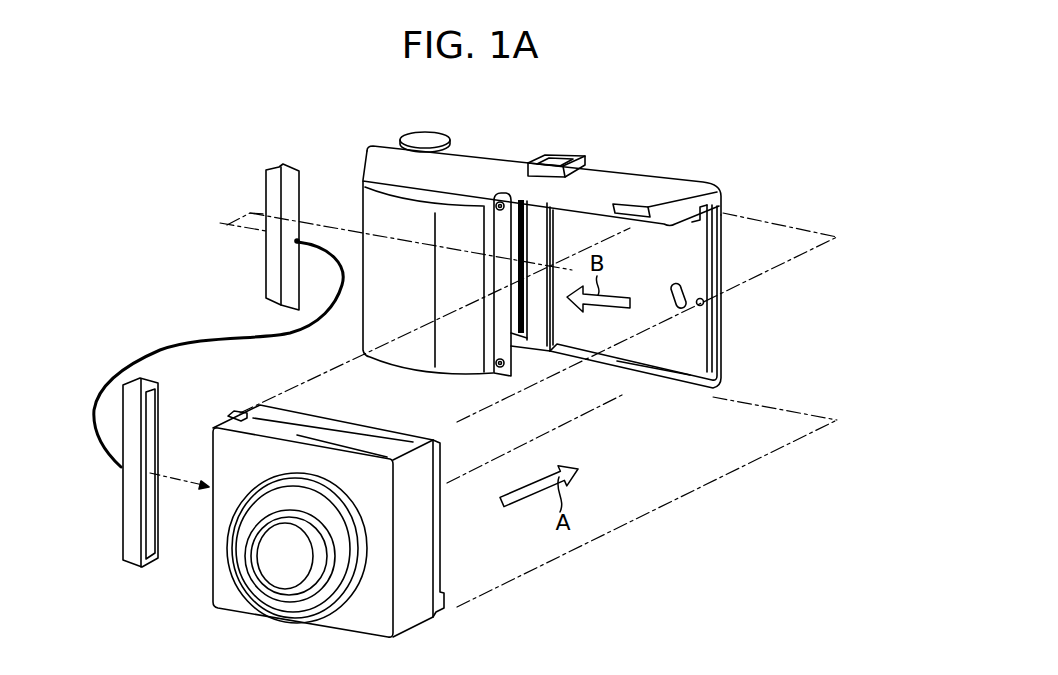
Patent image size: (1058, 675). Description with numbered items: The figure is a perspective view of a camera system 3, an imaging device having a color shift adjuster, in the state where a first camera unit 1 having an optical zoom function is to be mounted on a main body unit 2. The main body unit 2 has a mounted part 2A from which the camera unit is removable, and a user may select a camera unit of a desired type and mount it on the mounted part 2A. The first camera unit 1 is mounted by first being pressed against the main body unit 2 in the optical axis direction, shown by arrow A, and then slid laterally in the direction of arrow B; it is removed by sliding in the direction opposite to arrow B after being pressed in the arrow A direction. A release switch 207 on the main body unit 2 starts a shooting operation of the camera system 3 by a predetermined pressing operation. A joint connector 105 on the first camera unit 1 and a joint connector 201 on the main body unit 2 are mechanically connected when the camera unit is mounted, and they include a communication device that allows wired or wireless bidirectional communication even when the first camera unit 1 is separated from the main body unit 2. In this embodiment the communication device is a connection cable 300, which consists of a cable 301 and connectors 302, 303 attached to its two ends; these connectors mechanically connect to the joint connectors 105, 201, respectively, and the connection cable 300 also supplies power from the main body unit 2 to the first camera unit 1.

The first camera unit 1 is at (222, 428).
The main body unit 2 is at (517, 148).
The mounted part 2A is at (630, 253).
The camera system 3 is at (707, 168).
The joint connector 105 is at (235, 413).
The joint connector 201 is at (535, 223).
The release switch 207 is at (424, 134).
The connection cable 300 is at (218, 329).
The cable 301 is at (167, 349).
The connector 302 is at (283, 168).
The connector 303 is at (138, 349).